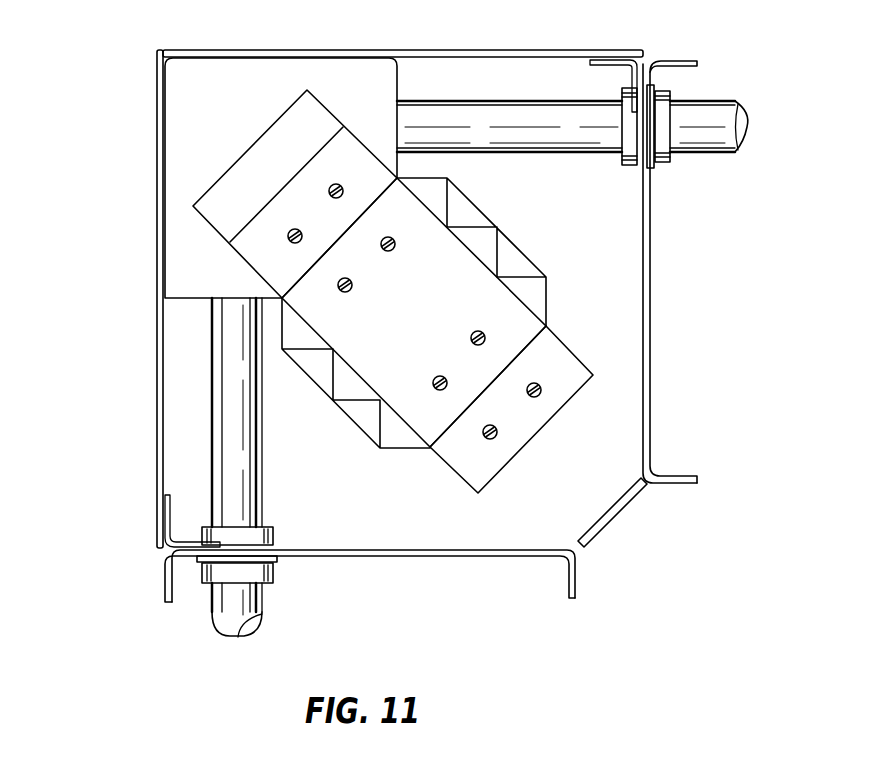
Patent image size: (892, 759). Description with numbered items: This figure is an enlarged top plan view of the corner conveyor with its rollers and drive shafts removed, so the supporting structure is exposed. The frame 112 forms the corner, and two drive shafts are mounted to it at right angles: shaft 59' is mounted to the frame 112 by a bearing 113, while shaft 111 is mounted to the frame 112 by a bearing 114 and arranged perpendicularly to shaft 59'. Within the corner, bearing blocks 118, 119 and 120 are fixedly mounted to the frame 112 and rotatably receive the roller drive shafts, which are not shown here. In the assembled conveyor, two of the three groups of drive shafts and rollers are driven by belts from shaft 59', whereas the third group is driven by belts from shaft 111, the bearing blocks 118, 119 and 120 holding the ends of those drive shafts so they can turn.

The shaft 111 is at (700, 155).
The frame 112 is at (155, 257).
The bearing 113 is at (273, 575).
The bearing 114 is at (672, 95).
The bearing block 118 is at (195, 101).
The bearing block 119 is at (437, 186).
The bearing block 120 is at (560, 357).
The shaft 59' is at (305, 467).